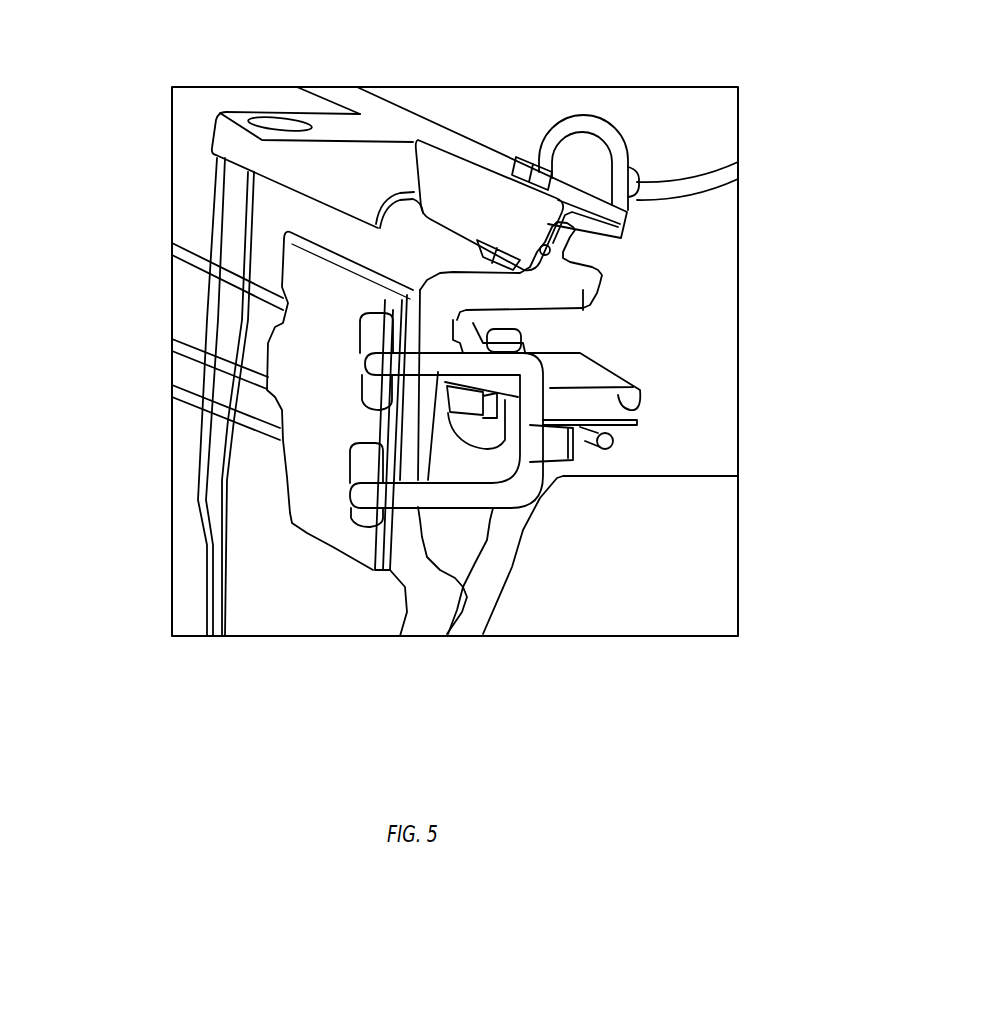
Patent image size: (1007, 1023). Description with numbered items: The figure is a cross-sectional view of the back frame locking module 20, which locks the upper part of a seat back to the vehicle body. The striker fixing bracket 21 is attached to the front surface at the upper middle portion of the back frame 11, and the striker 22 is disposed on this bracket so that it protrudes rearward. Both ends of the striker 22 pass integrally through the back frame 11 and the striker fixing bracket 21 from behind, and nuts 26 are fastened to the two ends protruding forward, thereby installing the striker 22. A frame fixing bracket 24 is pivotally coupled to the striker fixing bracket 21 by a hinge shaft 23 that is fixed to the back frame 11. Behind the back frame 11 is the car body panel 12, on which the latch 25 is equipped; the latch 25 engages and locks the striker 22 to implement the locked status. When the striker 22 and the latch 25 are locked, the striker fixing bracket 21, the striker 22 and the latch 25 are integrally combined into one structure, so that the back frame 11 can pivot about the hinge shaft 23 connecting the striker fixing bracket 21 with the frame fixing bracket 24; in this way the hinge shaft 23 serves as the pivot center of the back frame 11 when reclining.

The back frame 11 is at (197, 208).
The car body panel 12 is at (672, 137).
The back frame locking module 20 is at (513, 510).
The striker fixing bracket 21 is at (300, 408).
The striker 22 is at (460, 497).
The hinge shaft 23 is at (362, 280).
The frame fixing bracket 24 is at (477, 249).
The latch 25 is at (582, 410).
The nuts 26 is at (378, 340).